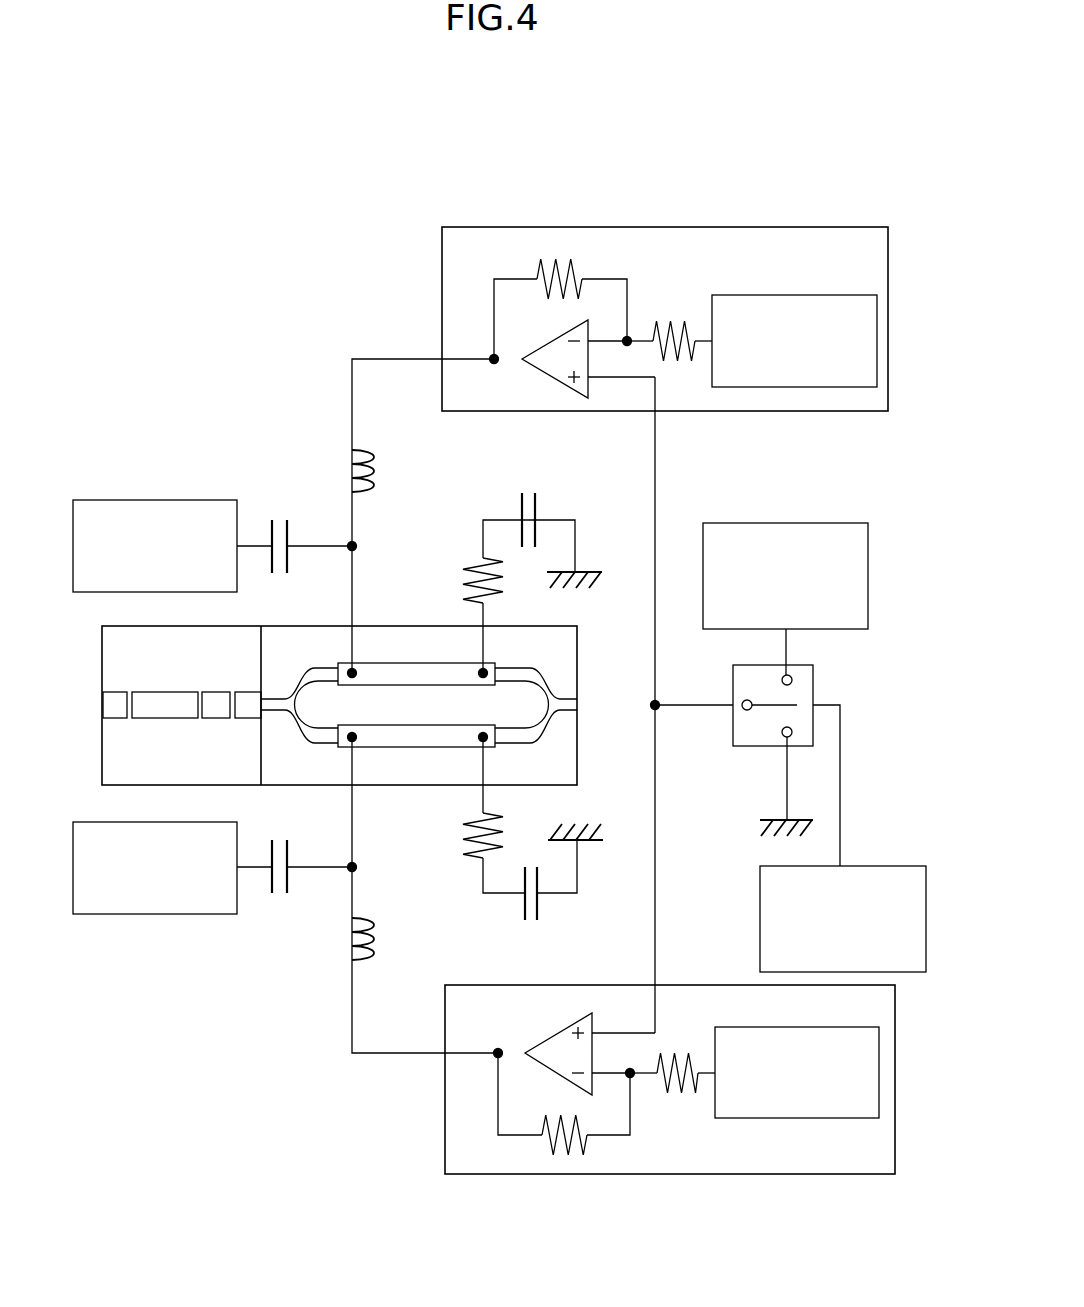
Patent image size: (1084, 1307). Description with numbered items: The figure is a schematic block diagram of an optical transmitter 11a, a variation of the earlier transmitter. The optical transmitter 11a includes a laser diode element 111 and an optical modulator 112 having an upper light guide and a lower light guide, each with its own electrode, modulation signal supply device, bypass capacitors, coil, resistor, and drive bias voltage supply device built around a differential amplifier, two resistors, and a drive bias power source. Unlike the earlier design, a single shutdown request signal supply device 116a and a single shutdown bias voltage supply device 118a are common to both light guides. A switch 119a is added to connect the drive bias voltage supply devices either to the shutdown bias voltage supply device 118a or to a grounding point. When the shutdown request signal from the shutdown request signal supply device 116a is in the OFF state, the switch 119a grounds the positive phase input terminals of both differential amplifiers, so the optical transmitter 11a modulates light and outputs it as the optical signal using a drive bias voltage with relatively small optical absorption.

The optical transmitter 11a is at (468, 96).
The laser diode element 111 is at (168, 626).
The optical modulator 112 is at (577, 655).
The shutdown bias voltage supply device 118a is at (738, 523).
The switch 119a is at (740, 746).
The shutdown request signal supply device 116a is at (860, 866).